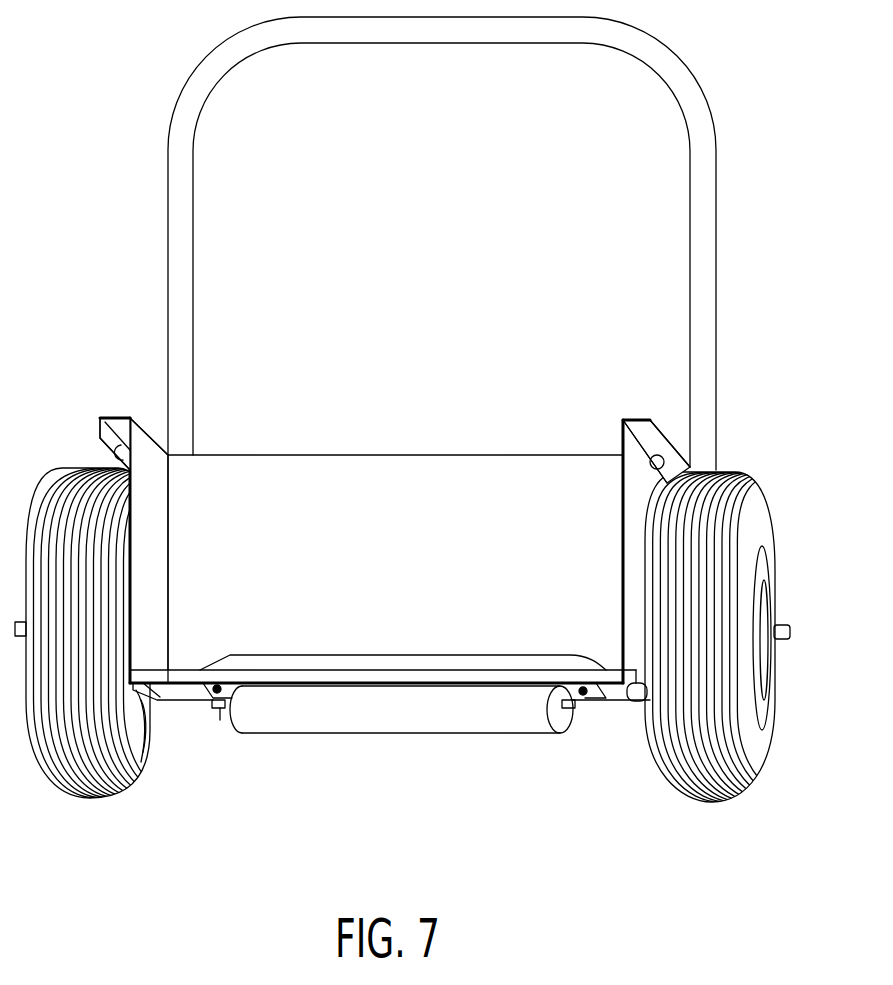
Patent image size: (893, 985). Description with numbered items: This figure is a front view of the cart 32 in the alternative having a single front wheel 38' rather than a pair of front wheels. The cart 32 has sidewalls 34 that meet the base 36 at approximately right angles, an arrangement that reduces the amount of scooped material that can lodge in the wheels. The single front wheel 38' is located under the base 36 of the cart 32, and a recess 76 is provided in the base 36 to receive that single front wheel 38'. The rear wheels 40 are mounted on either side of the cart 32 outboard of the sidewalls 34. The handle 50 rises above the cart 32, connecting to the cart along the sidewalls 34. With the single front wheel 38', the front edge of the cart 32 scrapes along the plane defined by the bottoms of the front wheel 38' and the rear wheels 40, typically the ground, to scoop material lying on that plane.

The cart 32 is at (297, 802).
The sidewalls 34 is at (635, 560).
The base 36 is at (180, 690).
The single front wheel 38' is at (401, 755).
The rear wheels 40 is at (752, 498).
The handle 50 is at (705, 136).
The recess 76 is at (305, 665).